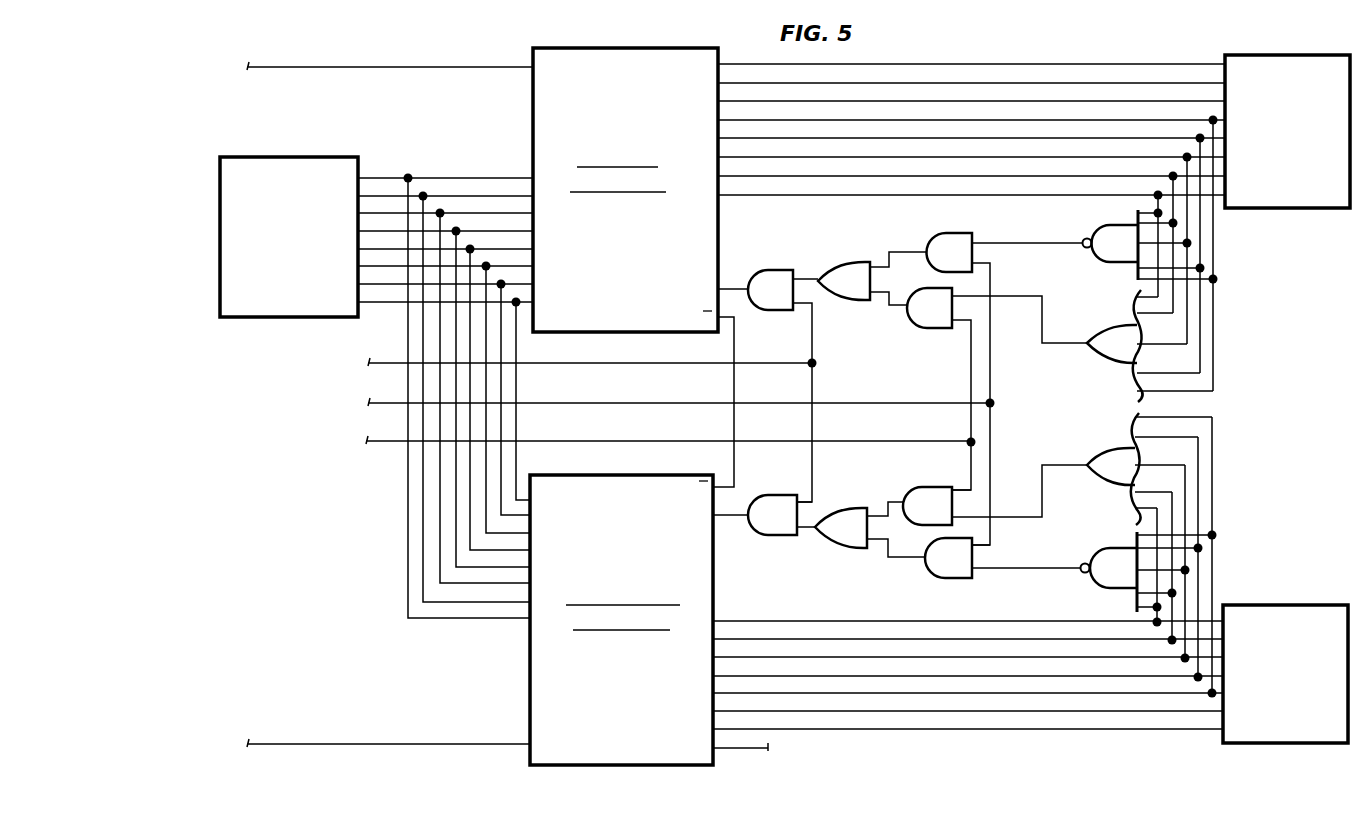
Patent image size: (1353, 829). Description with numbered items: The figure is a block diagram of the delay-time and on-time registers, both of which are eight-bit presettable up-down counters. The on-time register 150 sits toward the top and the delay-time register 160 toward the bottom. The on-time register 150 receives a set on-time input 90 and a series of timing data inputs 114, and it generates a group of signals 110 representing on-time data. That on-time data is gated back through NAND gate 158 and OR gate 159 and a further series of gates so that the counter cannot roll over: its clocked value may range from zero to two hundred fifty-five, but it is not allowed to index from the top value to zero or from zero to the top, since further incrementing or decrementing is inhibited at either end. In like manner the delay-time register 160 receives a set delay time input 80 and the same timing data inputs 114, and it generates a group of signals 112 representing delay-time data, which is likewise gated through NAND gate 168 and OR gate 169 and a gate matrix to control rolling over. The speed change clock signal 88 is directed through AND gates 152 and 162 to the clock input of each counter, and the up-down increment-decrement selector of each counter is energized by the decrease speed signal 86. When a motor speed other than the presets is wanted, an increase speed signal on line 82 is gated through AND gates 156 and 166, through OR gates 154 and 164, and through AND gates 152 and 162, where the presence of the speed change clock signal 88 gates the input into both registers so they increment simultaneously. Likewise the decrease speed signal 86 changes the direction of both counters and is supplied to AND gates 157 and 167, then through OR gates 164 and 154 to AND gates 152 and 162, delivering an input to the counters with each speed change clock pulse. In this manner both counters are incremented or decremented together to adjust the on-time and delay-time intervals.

The set delay time input 80 is at (283, 741).
The increase speed line 82 is at (388, 441).
The decrease speed signal 86 is at (393, 393).
The speed change clock signal 88 is at (393, 353).
The set on-time input 90 is at (265, 67).
The on-time data signals 110 is at (1272, 55).
The delay-time data signals 112 is at (1278, 605).
The timing data inputs 114 is at (277, 157).
The on-time register 150 is at (605, 48).
The AND gate 152 is at (786, 262).
The OR gate 154 is at (865, 247).
The AND gate 156 is at (940, 332).
The AND gate 157 is at (964, 229).
The NAND gate 158 is at (1121, 225).
The OR gate 159 is at (1121, 322).
The delay-time register 160 is at (603, 475).
The AND gate 162 is at (790, 478).
The OR gate 164 is at (862, 494).
The AND gate 166 is at (943, 484).
The AND gate 167 is at (950, 581).
The NAND gate 168 is at (1110, 592).
The OR gate 169 is at (1115, 487).